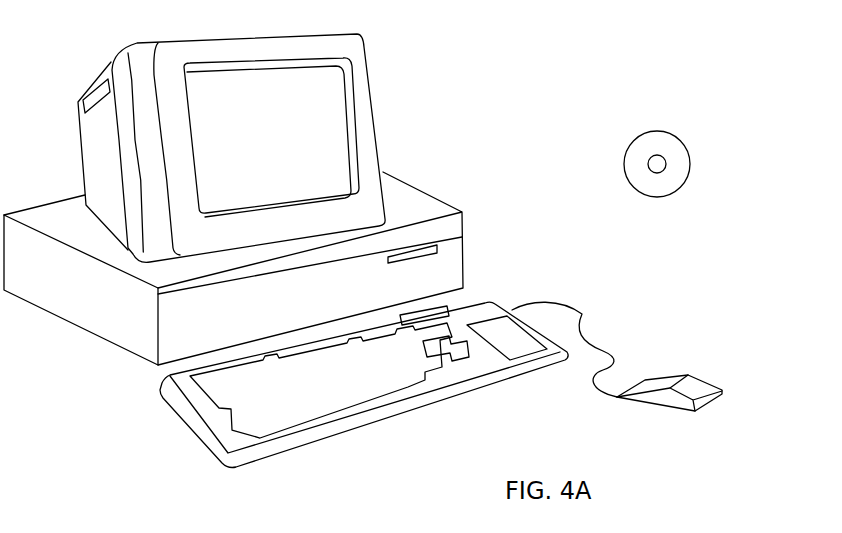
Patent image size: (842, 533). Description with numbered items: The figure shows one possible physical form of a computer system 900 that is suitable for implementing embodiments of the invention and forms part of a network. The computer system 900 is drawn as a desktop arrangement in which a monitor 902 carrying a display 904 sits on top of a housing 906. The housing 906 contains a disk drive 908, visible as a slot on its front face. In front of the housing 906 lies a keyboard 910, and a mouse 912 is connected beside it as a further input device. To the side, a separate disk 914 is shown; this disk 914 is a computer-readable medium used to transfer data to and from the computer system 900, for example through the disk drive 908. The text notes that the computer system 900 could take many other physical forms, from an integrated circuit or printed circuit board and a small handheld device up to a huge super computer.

The computer system 900 is at (563, 56).
The monitor 902 is at (377, 150).
The display 904 is at (339, 97).
The housing 906 is at (122, 349).
The disk drive 908 is at (437, 246).
The keyboard 910 is at (368, 423).
The mouse 912 is at (707, 380).
The disk 914 is at (675, 132).